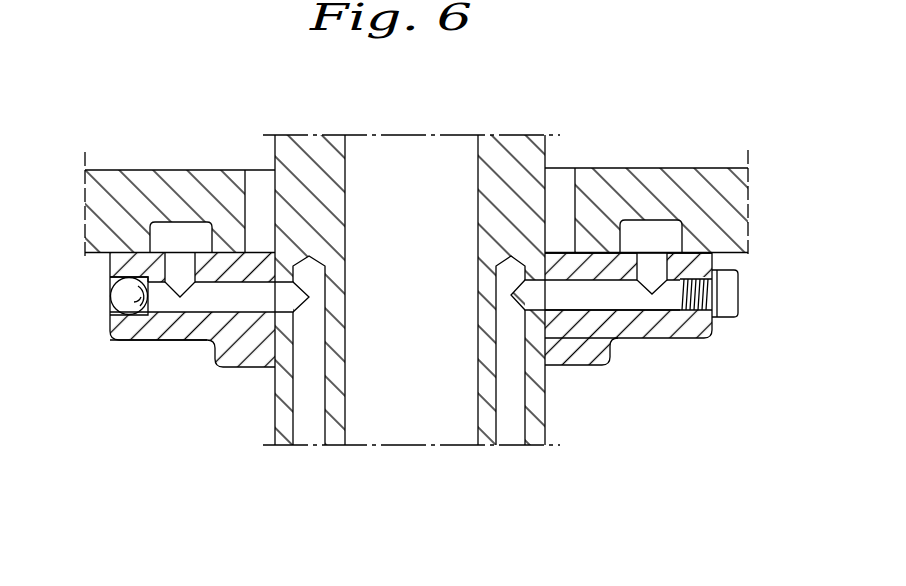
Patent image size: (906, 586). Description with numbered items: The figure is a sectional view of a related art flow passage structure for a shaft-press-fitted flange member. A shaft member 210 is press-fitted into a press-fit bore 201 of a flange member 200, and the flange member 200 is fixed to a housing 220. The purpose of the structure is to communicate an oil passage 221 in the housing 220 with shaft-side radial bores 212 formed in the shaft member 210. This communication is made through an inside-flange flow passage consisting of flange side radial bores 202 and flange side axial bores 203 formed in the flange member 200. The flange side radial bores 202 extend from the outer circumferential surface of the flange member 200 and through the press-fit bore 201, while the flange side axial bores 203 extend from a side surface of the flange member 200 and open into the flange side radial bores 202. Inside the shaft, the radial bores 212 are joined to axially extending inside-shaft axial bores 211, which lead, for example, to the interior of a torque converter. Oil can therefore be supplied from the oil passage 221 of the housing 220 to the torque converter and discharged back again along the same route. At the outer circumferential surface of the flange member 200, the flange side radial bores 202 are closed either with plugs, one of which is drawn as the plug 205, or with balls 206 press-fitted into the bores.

The flange member 200 is at (645, 332).
The press-fit bore 201 is at (278, 350).
The flange side radial bores 202 is at (208, 302).
The flange side axial bores 203 is at (182, 278).
The plug bolt 205 is at (732, 295).
The balls 206 is at (120, 302).
The shaft member 210 is at (512, 137).
The inside-shaft axial bores 211 is at (313, 438).
The shaft-side radial bores 212 is at (298, 298).
The housing 220 is at (690, 187).
The oil passage 221 is at (180, 236).